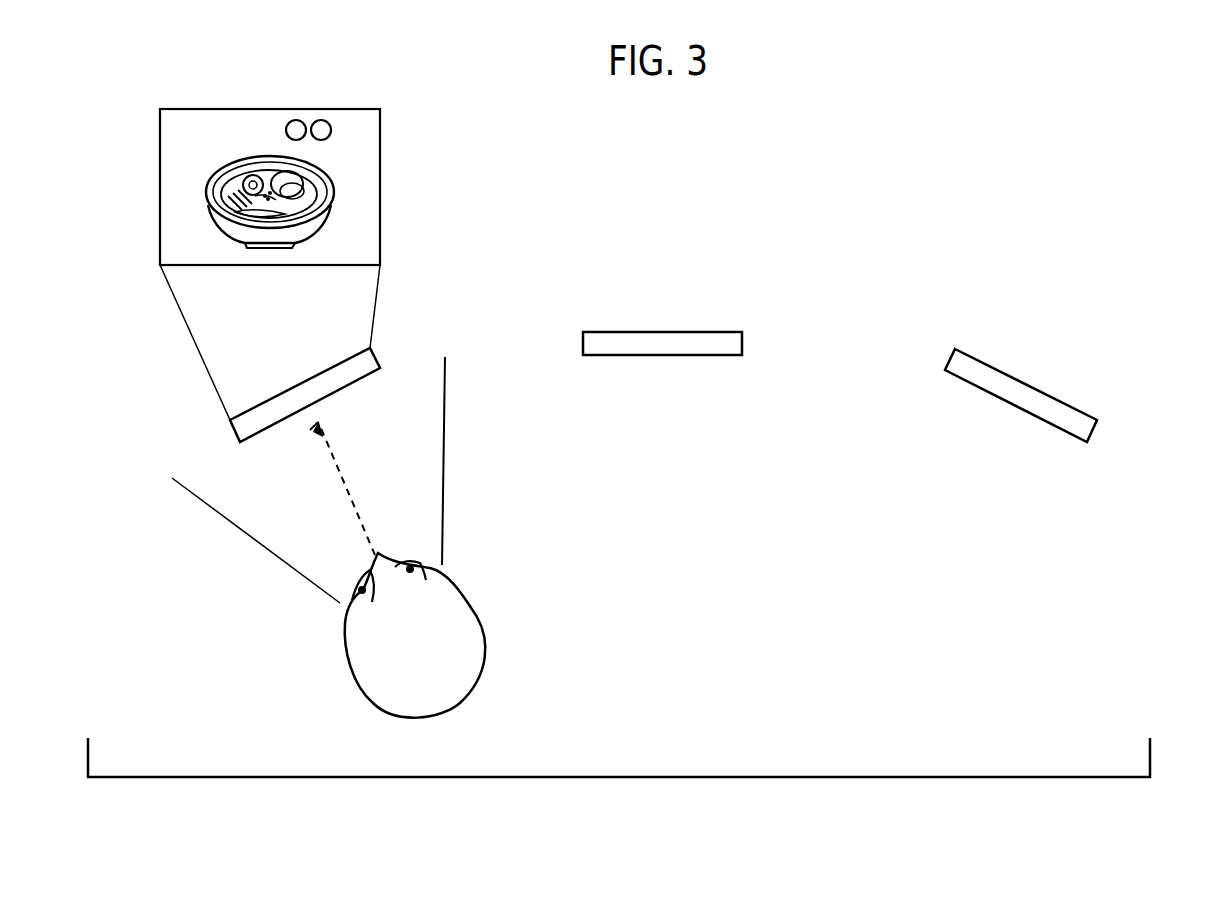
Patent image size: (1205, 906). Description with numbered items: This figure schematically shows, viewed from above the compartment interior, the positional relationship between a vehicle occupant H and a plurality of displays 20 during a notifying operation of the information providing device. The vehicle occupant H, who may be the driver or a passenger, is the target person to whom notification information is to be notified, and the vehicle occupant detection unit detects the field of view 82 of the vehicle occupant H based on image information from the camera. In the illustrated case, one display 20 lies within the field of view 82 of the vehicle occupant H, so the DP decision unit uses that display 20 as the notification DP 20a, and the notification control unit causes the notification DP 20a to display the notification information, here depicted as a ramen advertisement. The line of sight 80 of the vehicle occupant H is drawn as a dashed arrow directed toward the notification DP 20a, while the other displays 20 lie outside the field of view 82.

The display 20 is at (657, 332).
The notification DP 20a is at (236, 424).
The line of sight 80 is at (343, 475).
The field of view 82 is at (423, 478).
The vehicle occupant H is at (467, 602).